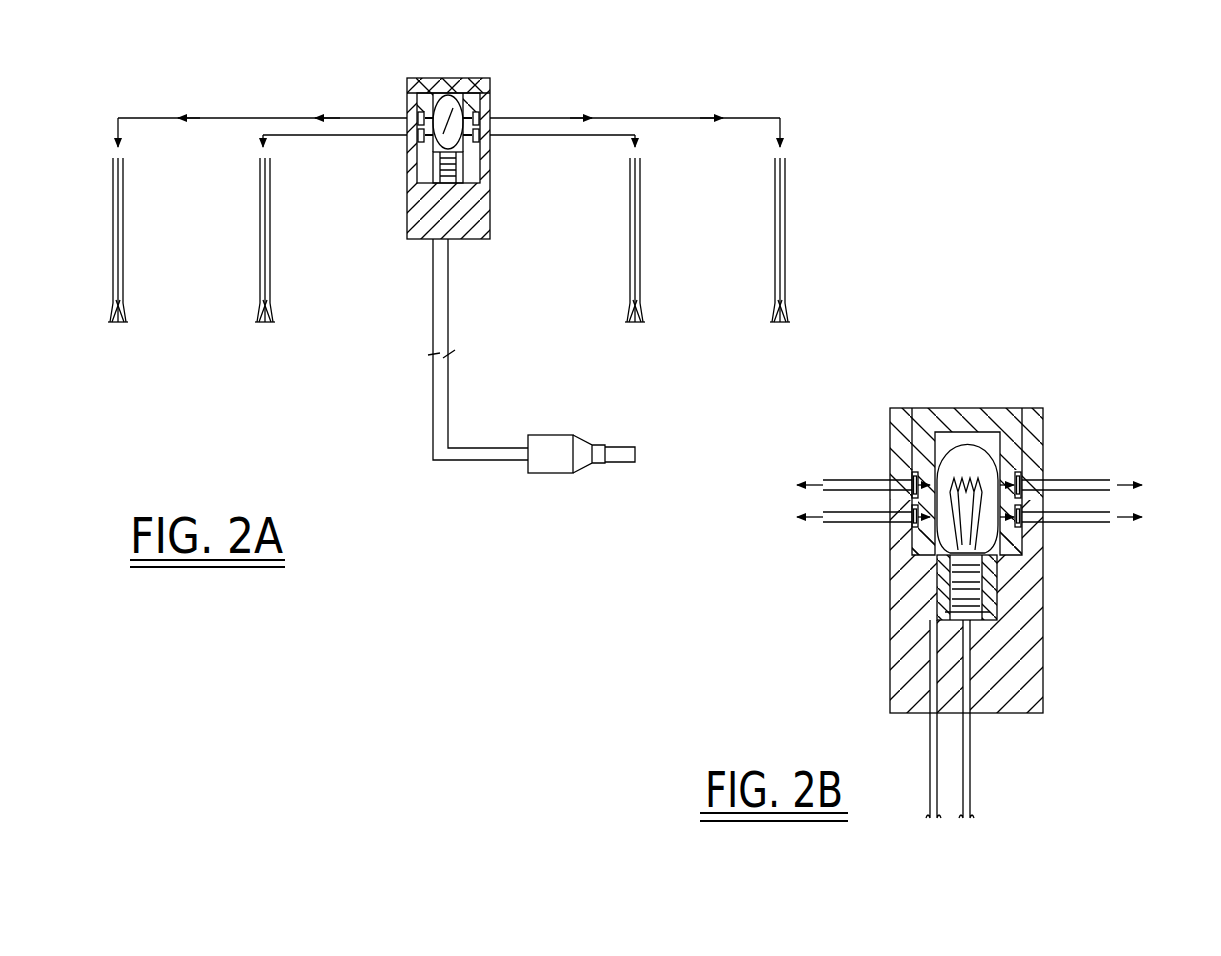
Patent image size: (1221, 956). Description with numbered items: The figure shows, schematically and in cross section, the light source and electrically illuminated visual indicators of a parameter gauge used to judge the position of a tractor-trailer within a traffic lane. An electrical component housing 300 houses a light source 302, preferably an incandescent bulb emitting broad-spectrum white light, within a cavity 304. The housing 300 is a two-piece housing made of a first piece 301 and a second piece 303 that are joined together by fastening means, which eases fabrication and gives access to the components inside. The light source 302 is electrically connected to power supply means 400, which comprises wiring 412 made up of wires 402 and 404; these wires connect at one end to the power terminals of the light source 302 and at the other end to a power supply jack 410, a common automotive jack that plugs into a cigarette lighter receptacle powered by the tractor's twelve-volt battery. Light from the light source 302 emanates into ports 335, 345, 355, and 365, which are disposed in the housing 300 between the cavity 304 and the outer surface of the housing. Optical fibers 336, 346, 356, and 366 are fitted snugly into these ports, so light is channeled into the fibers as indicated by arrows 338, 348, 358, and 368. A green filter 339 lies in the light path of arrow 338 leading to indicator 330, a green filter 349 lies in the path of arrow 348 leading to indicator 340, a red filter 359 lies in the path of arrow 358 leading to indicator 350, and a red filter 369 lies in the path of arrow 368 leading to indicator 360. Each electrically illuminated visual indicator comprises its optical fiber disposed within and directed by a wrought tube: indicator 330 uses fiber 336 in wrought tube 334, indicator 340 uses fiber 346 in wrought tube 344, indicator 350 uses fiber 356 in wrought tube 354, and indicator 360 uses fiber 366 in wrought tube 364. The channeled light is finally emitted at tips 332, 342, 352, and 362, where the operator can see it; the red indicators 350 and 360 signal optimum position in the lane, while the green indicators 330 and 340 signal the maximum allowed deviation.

In FIG. 2A, the electrical component housing 300 is at (499, 43).
In FIG. 2B, the electrical component housing 300 is at (1056, 327).
In FIG. 2A, the first piece 301 is at (490, 200).
In FIG. 2B, the first piece 301 is at (1045, 713).
In FIG. 2A, the light source 302 is at (448, 100).
In FIG. 2B, the light source 302 is at (970, 450).
In FIG. 2A, the second piece 303 is at (490, 92).
In FIG. 2B, the second piece 303 is at (1043, 418).
In FIG. 2A, the cavity 304 is at (433, 97).
In FIG. 2B, the cavity 304 is at (967, 587).
In FIG. 2A, the electrically illuminated visual indicator 330 is at (275, 345).
In FIG. 2A, the tip 332 is at (265, 325).
In FIG. 2A, the wrought tube 334 is at (268, 240).
In FIG. 2B, the port 335 is at (937, 570).
In FIG. 2A, the optical fiber 336 is at (365, 135).
In FIG. 2B, the optical fiber 336 is at (875, 522).
In FIG. 2B, the arrow 338 is at (815, 522).
In FIG. 2B, the green filter 339 is at (915, 527).
In FIG. 2A, the electrically illuminated visual indicator 340 is at (620, 345).
In FIG. 2A, the tip 342 is at (640, 325).
In FIG. 2A, the wrought tube 344 is at (630, 237).
In FIG. 2B, the port 345 is at (1015, 560).
In FIG. 2A, the optical fiber 346 is at (535, 135).
In FIG. 2B, the optical fiber 346 is at (1068, 524).
In FIG. 2B, the arrow 348 is at (1128, 518).
In FIG. 2B, the green filter 349 is at (1020, 530).
In FIG. 2A, the electrically illuminated visual indicator 350 is at (130, 345).
In FIG. 2A, the tip 352 is at (118, 325).
In FIG. 2A, the wrought tube 354 is at (148, 250).
In FIG. 2B, the port 355 is at (918, 478).
In FIG. 2A, the optical fiber 356 is at (248, 118).
In FIG. 2B, the optical fiber 356 is at (868, 480).
In FIG. 2B, the arrow 358 is at (814, 482).
In FIG. 2B, the red filter 359 is at (908, 470).
In FIG. 2A, the electrically illuminated visual indicator 360 is at (808, 345).
In FIG. 2A, the tip 362 is at (780, 325).
In FIG. 2A, the wrought tube 364 is at (775, 237).
In FIG. 2B, the port 365 is at (1018, 475).
In FIG. 2A, the optical fiber 366 is at (613, 118).
In FIG. 2B, the optical fiber 366 is at (1060, 480).
In FIG. 2B, the arrow 368 is at (1125, 484).
In FIG. 2B, the red filter 369 is at (1025, 470).
In FIG. 2A, the power supply means 400 is at (423, 485).
In FIG. 2A, the wire 402 is at (448, 297).
In FIG. 2B, the wire 402 is at (972, 762).
In FIG. 2A, the wire 404 is at (433, 297).
In FIG. 2B, the wire 404 is at (930, 747).
In FIG. 2A, the power supply jack 410 is at (548, 435).
In FIG. 2A, the wiring 412 is at (448, 358).